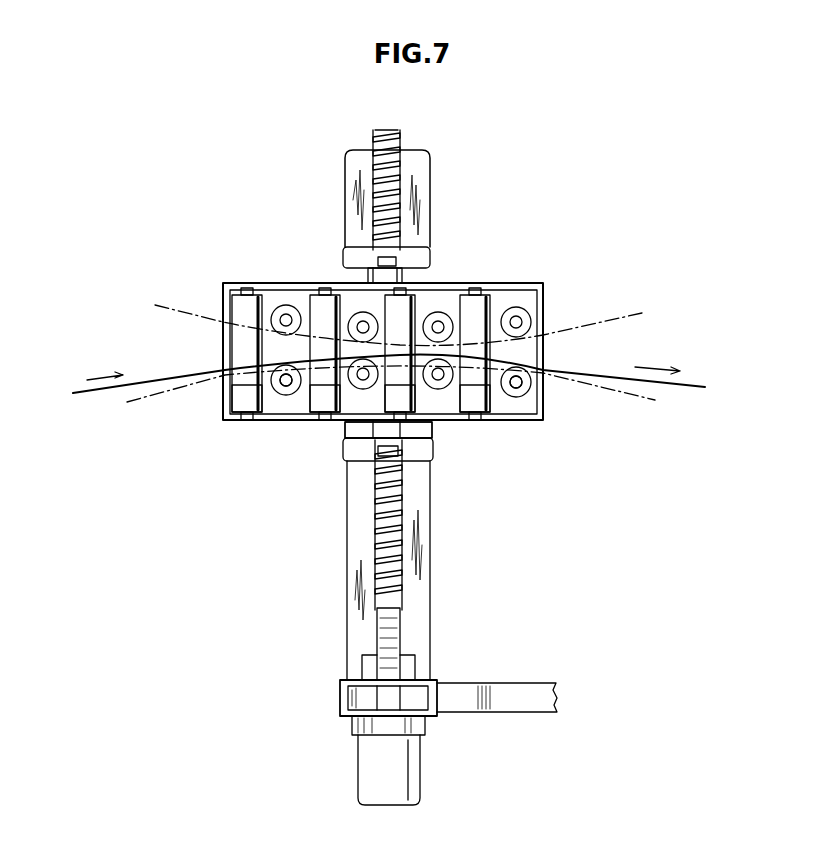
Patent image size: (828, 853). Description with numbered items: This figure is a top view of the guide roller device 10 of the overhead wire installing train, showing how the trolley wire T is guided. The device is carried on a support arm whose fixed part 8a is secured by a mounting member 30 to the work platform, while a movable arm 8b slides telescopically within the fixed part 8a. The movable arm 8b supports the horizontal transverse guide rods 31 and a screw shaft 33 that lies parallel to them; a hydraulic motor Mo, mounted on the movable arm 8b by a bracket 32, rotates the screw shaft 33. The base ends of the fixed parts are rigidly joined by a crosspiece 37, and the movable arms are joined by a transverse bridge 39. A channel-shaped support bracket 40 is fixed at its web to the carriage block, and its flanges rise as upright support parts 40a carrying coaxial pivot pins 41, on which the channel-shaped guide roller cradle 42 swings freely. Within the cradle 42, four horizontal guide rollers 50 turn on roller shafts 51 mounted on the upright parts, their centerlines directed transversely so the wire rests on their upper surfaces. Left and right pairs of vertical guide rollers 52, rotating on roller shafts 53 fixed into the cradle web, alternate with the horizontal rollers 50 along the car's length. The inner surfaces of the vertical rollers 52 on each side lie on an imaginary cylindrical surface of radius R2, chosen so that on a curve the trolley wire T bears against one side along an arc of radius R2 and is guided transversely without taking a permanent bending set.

The guide roller device 10 is at (263, 278).
The screw shaft 33 is at (400, 168).
The pivot pins 41 is at (382, 260).
The upright support parts 40a is at (413, 260).
The guide roller cradle 42 is at (522, 284).
The roller shafts 51 is at (247, 292).
The vertical guide rollers 52 is at (286, 305).
The horizontal guide rollers 50 is at (232, 393).
The roller shafts 53 is at (287, 382).
The support bracket 40 is at (341, 434).
The crosspiece 37 is at (425, 557).
The guide rods 31 is at (400, 620).
The transverse bridge 39 is at (360, 656).
The fixed part 8a is at (342, 684).
The movable arm 8b is at (357, 697).
The bracket 32 is at (352, 730).
The mounting member 30 is at (513, 690).
The hydraulic motor Mo is at (413, 763).
The trolley wire T is at (690, 385).
The radius of curvature R2 is at (618, 320).